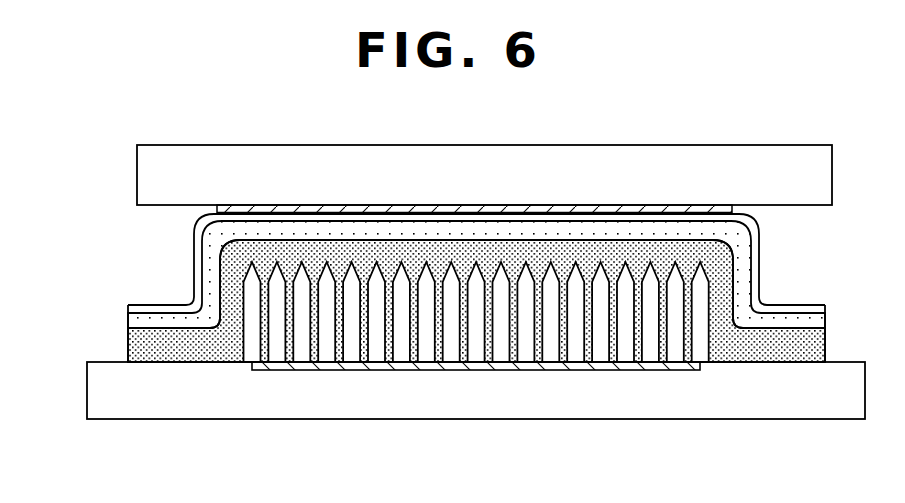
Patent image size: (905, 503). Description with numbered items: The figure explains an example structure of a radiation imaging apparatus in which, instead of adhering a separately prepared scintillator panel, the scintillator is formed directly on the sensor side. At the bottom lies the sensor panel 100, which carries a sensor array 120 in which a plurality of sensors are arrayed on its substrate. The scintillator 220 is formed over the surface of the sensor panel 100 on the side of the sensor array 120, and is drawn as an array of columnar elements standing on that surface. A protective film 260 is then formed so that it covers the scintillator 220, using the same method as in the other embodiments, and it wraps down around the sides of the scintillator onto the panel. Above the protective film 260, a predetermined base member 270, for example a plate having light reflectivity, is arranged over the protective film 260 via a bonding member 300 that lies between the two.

The sensor panel 100 is at (73, 360).
The sensor array 120 is at (295, 370).
The scintillator 220 is at (703, 350).
The protective film 260 is at (107, 295).
The base member 270 is at (137, 173).
The bonding member 300 is at (732, 207).